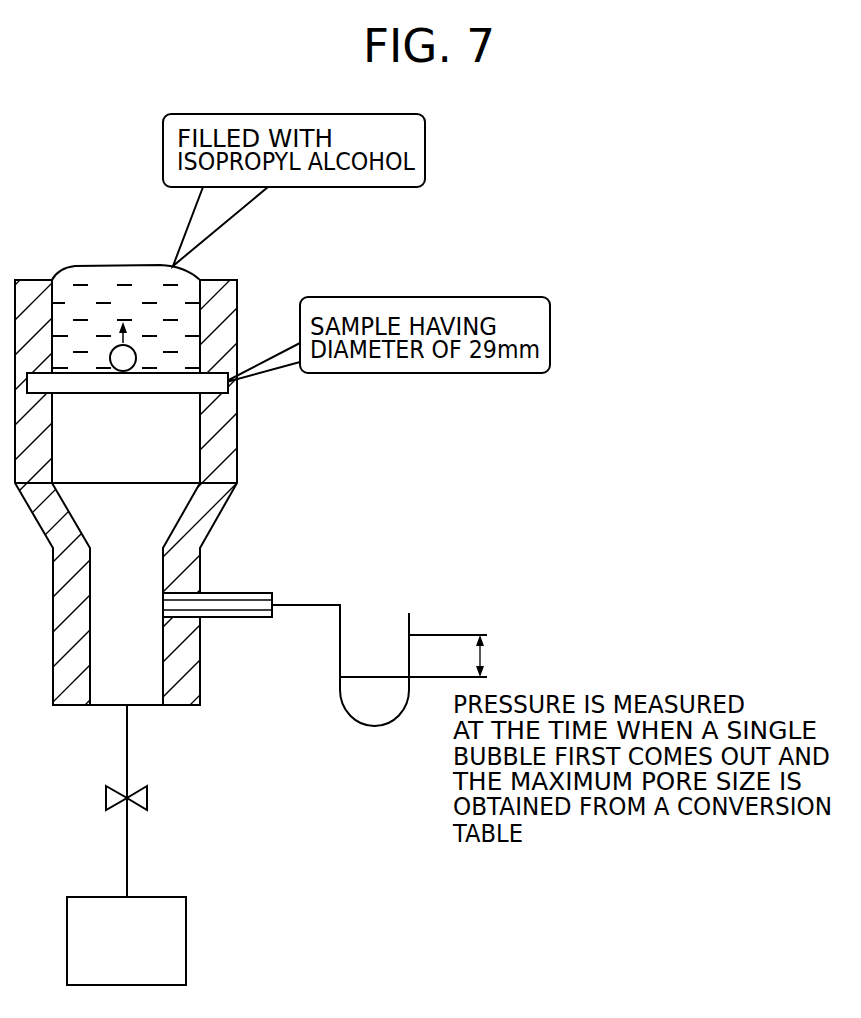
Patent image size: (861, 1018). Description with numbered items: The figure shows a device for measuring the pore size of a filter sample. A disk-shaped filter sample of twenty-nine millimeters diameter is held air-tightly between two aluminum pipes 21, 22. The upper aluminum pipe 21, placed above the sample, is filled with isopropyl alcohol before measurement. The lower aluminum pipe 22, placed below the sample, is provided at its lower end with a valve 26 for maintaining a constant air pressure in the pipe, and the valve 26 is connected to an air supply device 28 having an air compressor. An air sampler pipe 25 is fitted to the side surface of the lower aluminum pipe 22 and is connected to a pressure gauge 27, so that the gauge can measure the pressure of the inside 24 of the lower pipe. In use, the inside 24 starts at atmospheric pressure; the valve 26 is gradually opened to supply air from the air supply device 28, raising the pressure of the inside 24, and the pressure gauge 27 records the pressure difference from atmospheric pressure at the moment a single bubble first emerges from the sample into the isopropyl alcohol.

The aluminum pipe 21 is at (238, 297).
The aluminum pipe 22 is at (238, 437).
The inside 24 is at (147, 533).
The air sampler pipe 25 is at (259, 592).
The valve 26 is at (148, 797).
The pressure gauge 27 is at (456, 572).
The air supply device 28 is at (187, 938).